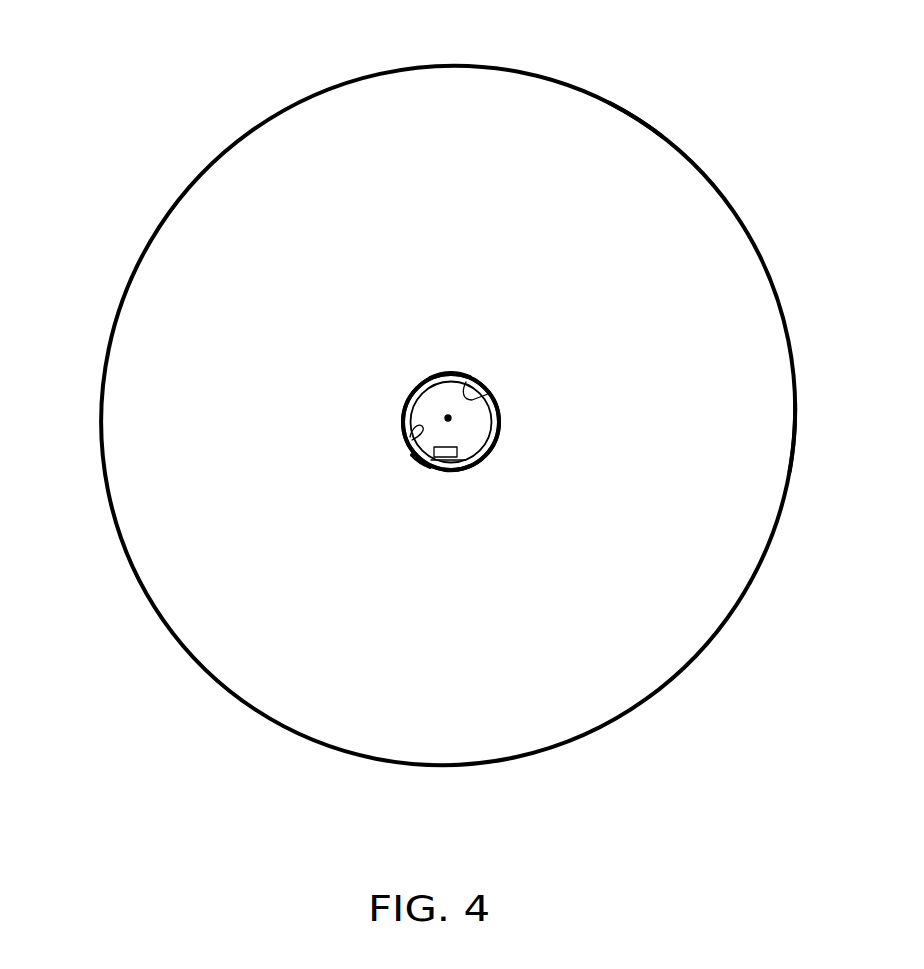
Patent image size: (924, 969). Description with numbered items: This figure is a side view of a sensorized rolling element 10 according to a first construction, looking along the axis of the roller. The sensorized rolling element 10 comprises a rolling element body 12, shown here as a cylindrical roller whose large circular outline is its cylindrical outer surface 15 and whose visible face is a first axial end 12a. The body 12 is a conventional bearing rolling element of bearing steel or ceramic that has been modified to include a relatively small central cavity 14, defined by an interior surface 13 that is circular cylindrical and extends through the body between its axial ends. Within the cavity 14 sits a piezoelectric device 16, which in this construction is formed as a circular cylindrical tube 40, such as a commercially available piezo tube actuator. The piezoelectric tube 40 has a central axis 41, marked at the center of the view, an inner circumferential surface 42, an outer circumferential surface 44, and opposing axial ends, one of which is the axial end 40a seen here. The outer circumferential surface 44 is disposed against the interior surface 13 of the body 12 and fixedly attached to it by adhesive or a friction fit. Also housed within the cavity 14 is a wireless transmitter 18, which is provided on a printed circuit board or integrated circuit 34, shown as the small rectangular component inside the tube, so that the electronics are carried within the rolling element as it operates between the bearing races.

The sensorized rolling element 10 is at (114, 37).
The rolling element body 12 is at (770, 219).
The first axial end 12a is at (765, 421).
The cylindrical outer surface 15 is at (637, 117).
The piezoelectric device 16 is at (406, 363).
The circular cylindrical tube 40 is at (396, 398).
The cavity 14 is at (512, 439).
The central axis 41 is at (450, 418).
The interior surface 13 is at (493, 390).
The outer circumferential surface 44 is at (449, 372).
The inner circumferential surface 42 is at (408, 445).
The wireless transmitter 18 is at (421, 466).
The printed circuit board or integrated circuit 34 is at (466, 453).
The first axial end of piezoelectric tube 40a is at (459, 466).